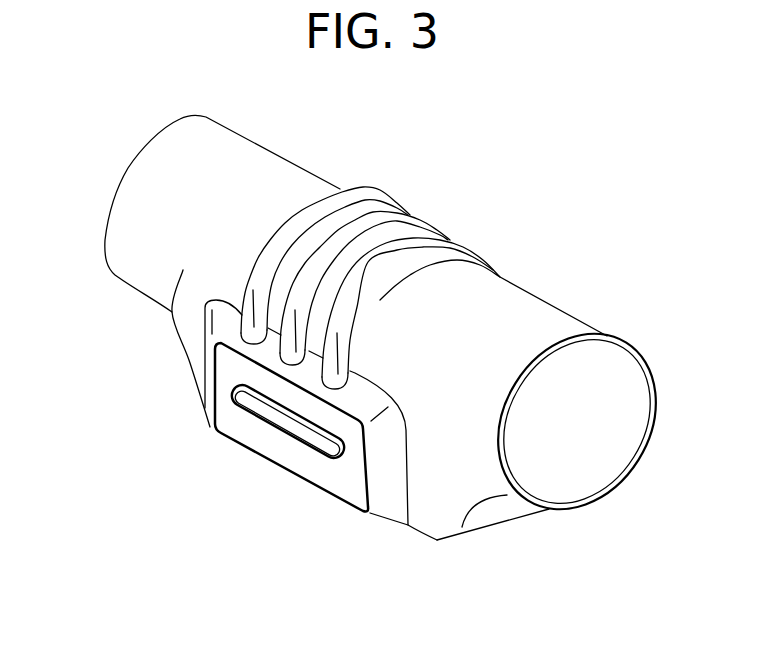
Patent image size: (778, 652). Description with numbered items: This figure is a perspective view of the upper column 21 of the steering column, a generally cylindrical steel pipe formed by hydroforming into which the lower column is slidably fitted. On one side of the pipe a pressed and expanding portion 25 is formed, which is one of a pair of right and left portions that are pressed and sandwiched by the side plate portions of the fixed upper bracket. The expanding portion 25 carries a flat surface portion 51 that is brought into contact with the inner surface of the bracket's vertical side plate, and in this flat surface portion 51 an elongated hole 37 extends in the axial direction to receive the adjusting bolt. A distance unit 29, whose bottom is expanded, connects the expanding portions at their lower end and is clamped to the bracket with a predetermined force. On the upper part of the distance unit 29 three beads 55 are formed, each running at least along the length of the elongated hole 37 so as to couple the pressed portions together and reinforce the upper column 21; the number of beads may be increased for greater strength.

The upper column 21 is at (553, 221).
The pressed and expanding portion 25 is at (384, 488).
The distance unit 29 is at (187, 420).
The elongated hole 37 is at (307, 427).
The flat surface portion 51 is at (240, 435).
The bead 55 is at (415, 215).